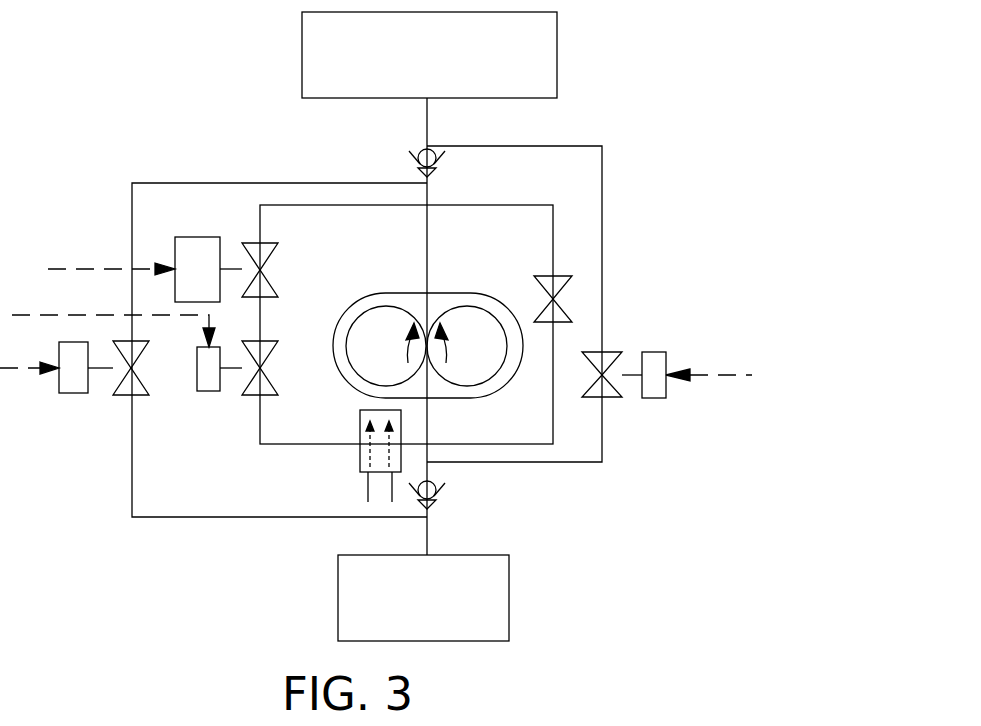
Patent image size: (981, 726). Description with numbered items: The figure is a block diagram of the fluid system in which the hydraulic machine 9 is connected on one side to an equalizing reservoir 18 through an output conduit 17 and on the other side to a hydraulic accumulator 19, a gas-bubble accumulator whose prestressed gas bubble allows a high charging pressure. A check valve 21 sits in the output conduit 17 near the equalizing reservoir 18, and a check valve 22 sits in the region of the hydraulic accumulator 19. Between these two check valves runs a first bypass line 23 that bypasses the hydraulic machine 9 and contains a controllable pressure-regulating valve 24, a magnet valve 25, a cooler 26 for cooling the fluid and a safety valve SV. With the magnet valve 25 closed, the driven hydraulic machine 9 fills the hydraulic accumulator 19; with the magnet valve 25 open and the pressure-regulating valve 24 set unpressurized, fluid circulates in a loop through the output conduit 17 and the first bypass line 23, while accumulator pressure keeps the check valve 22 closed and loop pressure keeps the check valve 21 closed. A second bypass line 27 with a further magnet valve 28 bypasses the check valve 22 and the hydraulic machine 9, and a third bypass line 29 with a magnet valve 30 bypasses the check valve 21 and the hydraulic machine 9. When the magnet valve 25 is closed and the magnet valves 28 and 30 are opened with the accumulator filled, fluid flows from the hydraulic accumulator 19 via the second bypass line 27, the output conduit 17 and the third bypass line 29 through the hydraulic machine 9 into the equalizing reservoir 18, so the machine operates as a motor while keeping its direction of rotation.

The hydraulic machine 9 is at (463, 297).
The output conduit 17 is at (427, 243).
The equalizing reservoir 18 is at (493, 600).
The hydraulic accumulator 19 is at (538, 59).
The check valve 21 is at (430, 495).
The check valve 22 is at (435, 163).
The first bypass line 23 is at (332, 205).
The pressure-regulating valve 24 is at (257, 248).
The magnet valve 25 is at (252, 388).
The cooler 26 is at (360, 415).
The second bypass line 27 is at (602, 185).
The magnet valve 28 is at (603, 358).
The third bypass line 29 is at (152, 182).
The magnet valve 30 is at (125, 387).
The safety valve SV is at (553, 287).